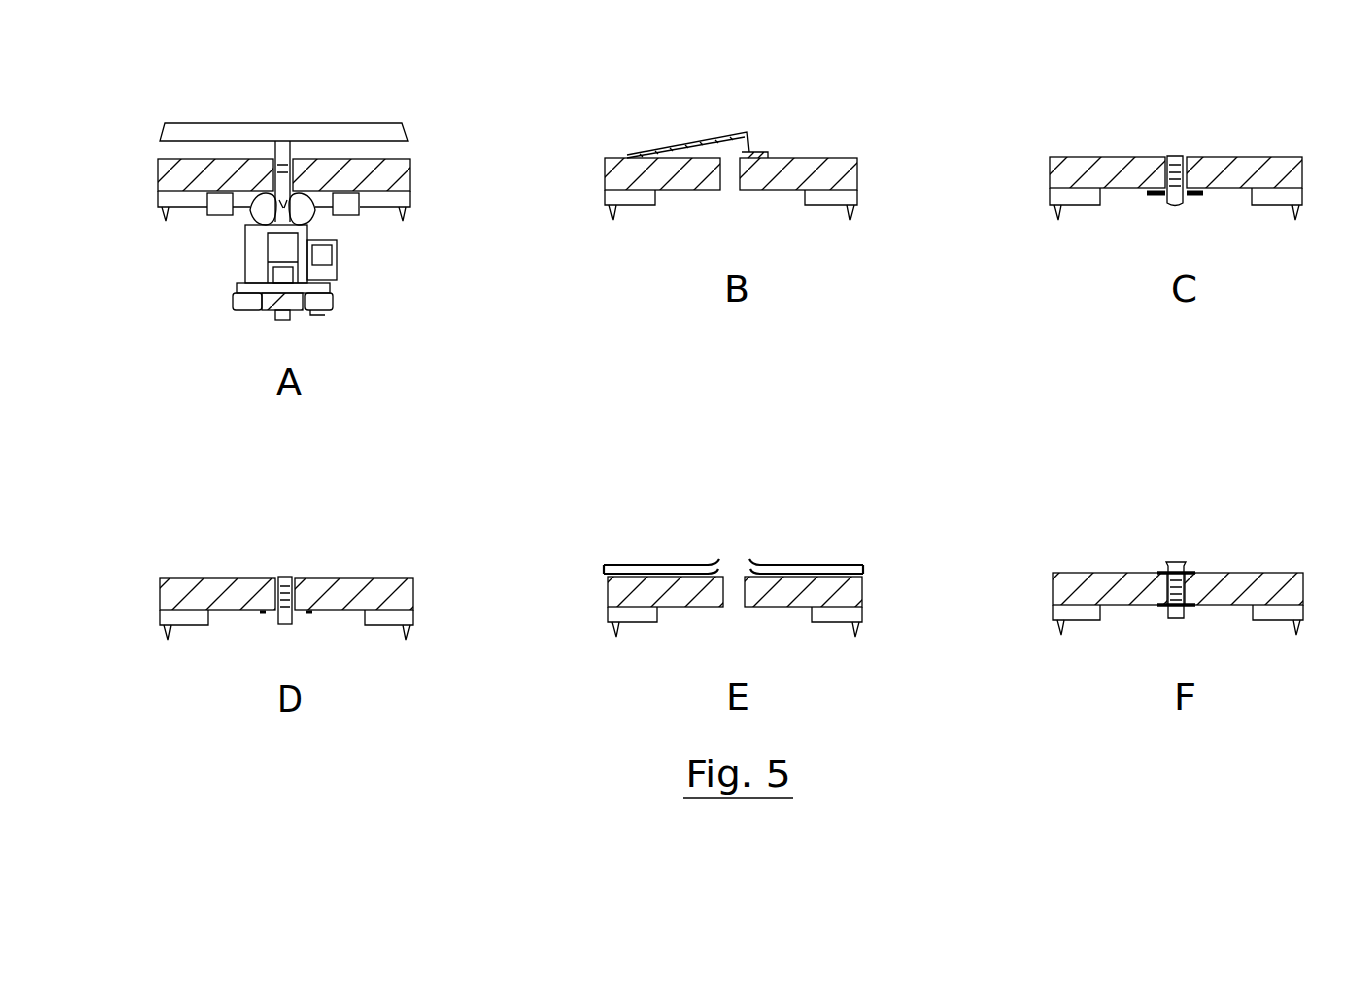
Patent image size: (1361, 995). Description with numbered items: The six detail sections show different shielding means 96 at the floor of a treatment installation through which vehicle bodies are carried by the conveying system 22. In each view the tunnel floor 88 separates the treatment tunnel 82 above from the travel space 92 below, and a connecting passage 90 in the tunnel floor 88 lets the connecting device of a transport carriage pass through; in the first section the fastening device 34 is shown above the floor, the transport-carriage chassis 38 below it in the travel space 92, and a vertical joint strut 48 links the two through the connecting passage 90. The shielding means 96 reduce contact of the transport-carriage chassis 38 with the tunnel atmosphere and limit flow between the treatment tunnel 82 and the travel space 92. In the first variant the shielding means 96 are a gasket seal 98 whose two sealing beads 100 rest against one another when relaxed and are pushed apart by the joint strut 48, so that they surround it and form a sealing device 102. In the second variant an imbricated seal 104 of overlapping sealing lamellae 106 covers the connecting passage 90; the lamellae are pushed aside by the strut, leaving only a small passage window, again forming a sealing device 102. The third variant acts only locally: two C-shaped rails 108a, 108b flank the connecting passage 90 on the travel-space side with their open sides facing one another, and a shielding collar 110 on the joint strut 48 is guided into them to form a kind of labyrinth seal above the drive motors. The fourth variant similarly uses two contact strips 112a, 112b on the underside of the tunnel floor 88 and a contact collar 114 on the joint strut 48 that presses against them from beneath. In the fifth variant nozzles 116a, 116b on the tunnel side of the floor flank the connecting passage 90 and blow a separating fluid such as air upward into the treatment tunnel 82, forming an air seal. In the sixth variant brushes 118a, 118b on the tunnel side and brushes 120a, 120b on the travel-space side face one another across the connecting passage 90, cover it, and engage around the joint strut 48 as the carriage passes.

In FIG. 5A, the conveying system 22 is at (357, 257).
In FIG. 5A, the fastening device 34 is at (414, 127).
In FIG. 5A, the transport-carriage chassis 38 is at (235, 310).
In FIG. 5A, the joint strut 48 is at (276, 148).
In FIG. 5C, the joint strut 48 is at (1171, 183).
In FIG. 5D, the joint strut 48 is at (289, 607).
In FIG. 5F, the joint strut 48 is at (1206, 593).
In FIG. 5A, the treatment tunnel 82 is at (212, 81).
In FIG. 5B, the treatment tunnel 82 is at (640, 79).
In FIG. 5C, the treatment tunnel 82 is at (1075, 104).
In FIG. 5D, the treatment tunnel 82 is at (162, 547).
In FIG. 5E, the treatment tunnel 82 is at (615, 543).
In FIG. 5F, the treatment tunnel 82 is at (1035, 542).
In FIG. 5A, the tunnel floor 88 is at (175, 187).
In FIG. 5B, the tunnel floor 88 is at (627, 176).
In FIG. 5C, the tunnel floor 88 is at (1070, 181).
In FIG. 5D, the tunnel floor 88 is at (183, 592).
In FIG. 5E, the tunnel floor 88 is at (615, 600).
In FIG. 5F, the tunnel floor 88 is at (1068, 592).
In FIG. 5A, the connecting passage 90 is at (285, 148).
In FIG. 5B, the connecting passage 90 is at (720, 182).
In FIG. 5C, the connecting passage 90 is at (1176, 166).
In FIG. 5D, the connecting passage 90 is at (290, 585).
In FIG. 5E, the connecting passage 90 is at (733, 602).
In FIG. 5F, the connecting passage 90 is at (1183, 570).
In FIG. 5A, the travel space 92 is at (127, 256).
In FIG. 5B, the travel space 92 is at (619, 254).
In FIG. 5C, the travel space 92 is at (1060, 249).
In FIG. 5D, the travel space 92 is at (173, 670).
In FIG. 5E, the travel space 92 is at (622, 670).
In FIG. 5F, the travel space 92 is at (1070, 667).
In FIG. 5A, the shielding means 96 is at (227, 222).
In FIG. 5B, the shielding means 96 is at (770, 138).
In FIG. 5C, the shielding means 96 is at (1206, 150).
In FIG. 5D, the shielding means 96 is at (321, 598).
In FIG. 5E, the shielding means 96 is at (734, 546).
In FIG. 5F, the shielding means 96 is at (1178, 556).
In FIG. 5A, the gasket seal 98 is at (237, 238).
In FIG. 5A, the sealing beads 100 is at (262, 193).
In FIG. 5A, the sealing device 102 is at (320, 217).
In FIG. 5B, the sealing device 102 is at (729, 160).
In FIG. 5E, the sealing device 102 is at (830, 553).
In FIG. 5F, the sealing device 102 is at (1142, 563).
In FIG. 5B, the imbricated seal 104 is at (756, 117).
In FIG. 5B, the sealing lamellae 106 is at (702, 153).
In FIG. 5C, the rail 108a is at (1148, 195).
In FIG. 5C, the rail 108b is at (1196, 198).
In FIG. 5C, the shielding collar 110 is at (1173, 202).
In FIG. 5D, the contact strip 112a is at (262, 615).
In FIG. 5D, the contact strip 112b is at (316, 612).
In FIG. 5D, the contact collar 114 is at (300, 615).
In FIG. 5E, the nozzle 116a is at (664, 562).
In FIG. 5E, the nozzle 116b is at (785, 560).
In FIG. 5F, the brush 118a is at (1163, 570).
In FIG. 5F, the brush 118b is at (1190, 567).
In FIG. 5F, the brush 120a is at (1162, 608).
In FIG. 5F, the brush 120b is at (1197, 608).